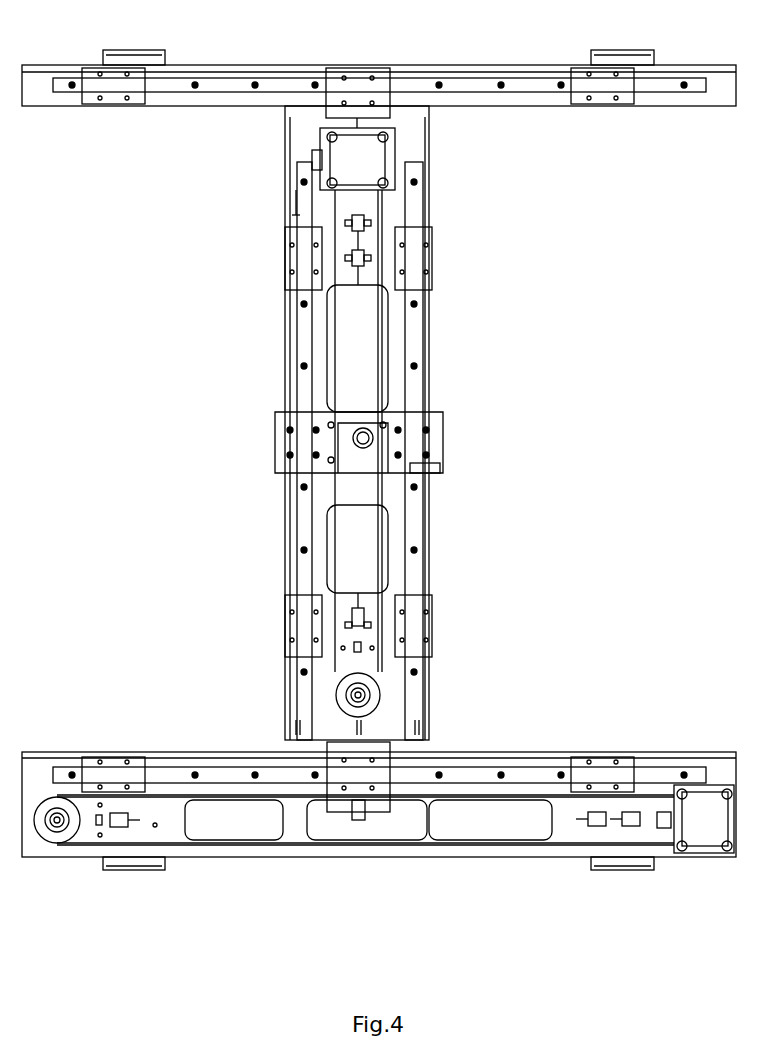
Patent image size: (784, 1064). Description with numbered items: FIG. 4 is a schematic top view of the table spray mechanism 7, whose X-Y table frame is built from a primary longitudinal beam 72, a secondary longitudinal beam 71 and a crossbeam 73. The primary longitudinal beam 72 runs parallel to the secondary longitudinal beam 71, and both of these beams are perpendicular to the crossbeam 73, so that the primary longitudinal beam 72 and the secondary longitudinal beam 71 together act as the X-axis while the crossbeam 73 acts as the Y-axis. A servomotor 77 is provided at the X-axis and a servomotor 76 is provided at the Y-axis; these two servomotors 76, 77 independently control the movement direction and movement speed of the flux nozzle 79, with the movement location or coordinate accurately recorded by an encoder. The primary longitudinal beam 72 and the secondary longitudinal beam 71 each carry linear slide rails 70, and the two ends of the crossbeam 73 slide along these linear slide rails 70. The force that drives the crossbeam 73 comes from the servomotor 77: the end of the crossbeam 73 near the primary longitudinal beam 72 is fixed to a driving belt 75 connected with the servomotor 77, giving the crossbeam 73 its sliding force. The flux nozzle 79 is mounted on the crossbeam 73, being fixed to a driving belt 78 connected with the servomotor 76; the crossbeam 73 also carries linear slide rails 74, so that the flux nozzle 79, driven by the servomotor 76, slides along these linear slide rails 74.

The spray mechanism 7 is at (625, 462).
The linear slide rails 70 is at (473, 84).
The secondary longitudinal beam 71 is at (672, 106).
The primary longitudinal beam 72 is at (560, 754).
The crossbeam 73 is at (430, 337).
The linear slide rails 74 is at (415, 522).
The driving belt 75 is at (222, 845).
The servomotor 76 is at (378, 153).
The servomotor 77 is at (705, 838).
The driving belt 78 is at (335, 672).
The flux nozzle 79 is at (443, 442).